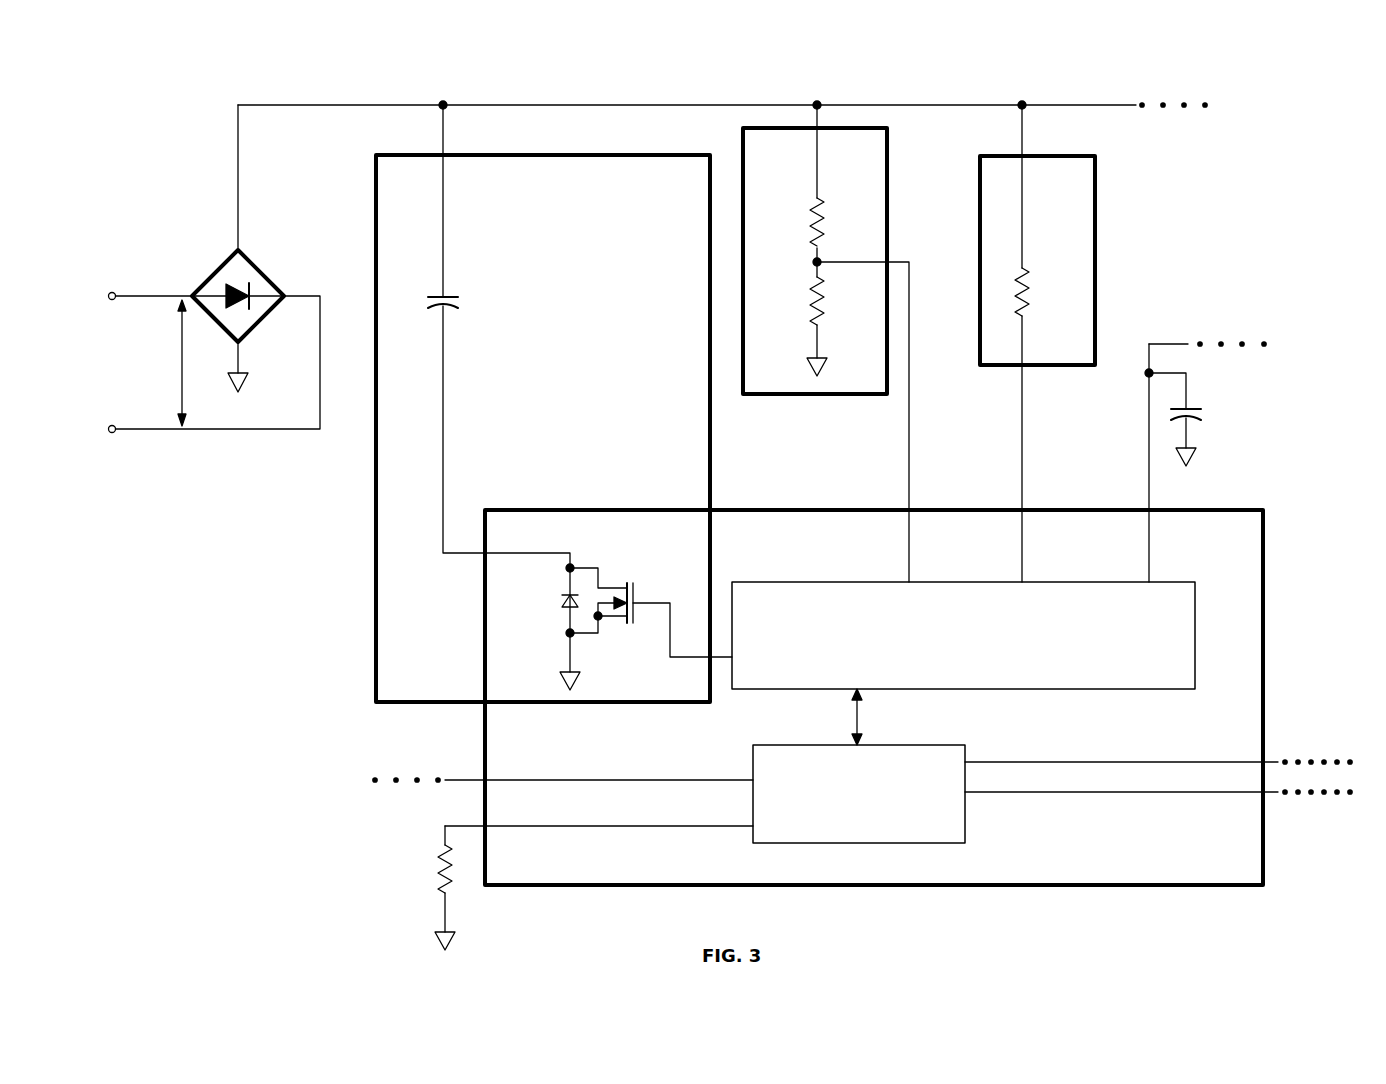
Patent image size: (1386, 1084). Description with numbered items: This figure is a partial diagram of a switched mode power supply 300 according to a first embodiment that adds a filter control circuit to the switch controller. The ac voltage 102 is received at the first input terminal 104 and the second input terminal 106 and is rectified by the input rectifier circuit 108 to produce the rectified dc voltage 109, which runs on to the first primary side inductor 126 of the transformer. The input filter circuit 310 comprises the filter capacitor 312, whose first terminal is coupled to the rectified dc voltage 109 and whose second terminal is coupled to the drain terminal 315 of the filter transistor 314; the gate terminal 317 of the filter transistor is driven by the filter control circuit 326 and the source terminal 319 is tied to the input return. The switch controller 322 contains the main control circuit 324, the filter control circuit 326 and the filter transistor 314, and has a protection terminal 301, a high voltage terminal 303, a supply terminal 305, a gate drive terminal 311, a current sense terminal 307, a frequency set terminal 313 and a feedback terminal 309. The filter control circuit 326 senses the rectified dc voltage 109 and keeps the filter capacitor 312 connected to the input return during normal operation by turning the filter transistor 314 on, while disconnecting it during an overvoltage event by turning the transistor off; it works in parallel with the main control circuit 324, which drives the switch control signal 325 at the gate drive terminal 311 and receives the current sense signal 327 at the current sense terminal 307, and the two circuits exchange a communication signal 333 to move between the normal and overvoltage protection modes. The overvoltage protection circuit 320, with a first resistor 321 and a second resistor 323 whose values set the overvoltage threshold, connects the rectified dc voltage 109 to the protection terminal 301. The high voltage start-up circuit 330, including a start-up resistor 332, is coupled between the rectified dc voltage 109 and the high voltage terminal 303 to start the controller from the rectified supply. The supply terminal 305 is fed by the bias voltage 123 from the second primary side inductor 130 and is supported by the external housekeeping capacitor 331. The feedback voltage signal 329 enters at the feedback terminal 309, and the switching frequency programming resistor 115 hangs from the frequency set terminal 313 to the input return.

The ac voltage Vac 102 is at (202, 382).
The input terminal ac1 104 is at (106, 270).
The input terminal ac2 106 is at (104, 484).
The input rectifier circuit 108 is at (250, 250).
The rectified dc voltage Vdc 109 is at (376, 84).
The switching frequency programming resistor Rfset 115 is at (438, 863).
The bias voltage 123 is at (1245, 332).
The first primary side inductor L1 126 is at (1176, 90).
The second primary side inductor L3 130 is at (1207, 344).
The SMPS 300 is at (790, 80).
The terminal PRO 301 is at (945, 522).
The terminal HV 303 is at (1058, 522).
The terminal Vcc 305 is at (1186, 522).
The terminal CS 307 is at (1246, 846).
The terminal FB 309 is at (560, 770).
The input filter circuit 310 is at (554, 403).
The terminal Vg 311 is at (1244, 738).
The capacitor C1 312 is at (431, 292).
The terminal FSET 313 is at (582, 818).
The filter transistor Q1 314 is at (545, 606).
The drain terminal 315 is at (609, 530).
The gate terminal 317 is at (663, 570).
The source terminal 319 is at (545, 655).
The OVP circuit 320 is at (815, 249).
The resistor R3 321 is at (838, 220).
The switch controller U1 322 is at (874, 697).
The resistor R4 323 is at (806, 292).
The main control circuit 324 is at (859, 794).
The switch control signal 325 is at (998, 758).
The filter control circuit 326 is at (963, 635).
The current sense signal 327 is at (998, 797).
The feedback voltage signal Vfb 329 is at (434, 770).
The high voltage start-up circuit 330 is at (1037, 235).
The capacitor C2 331 is at (1197, 403).
The resistor R5 332 is at (1042, 286).
The communication signal 333 is at (894, 718).